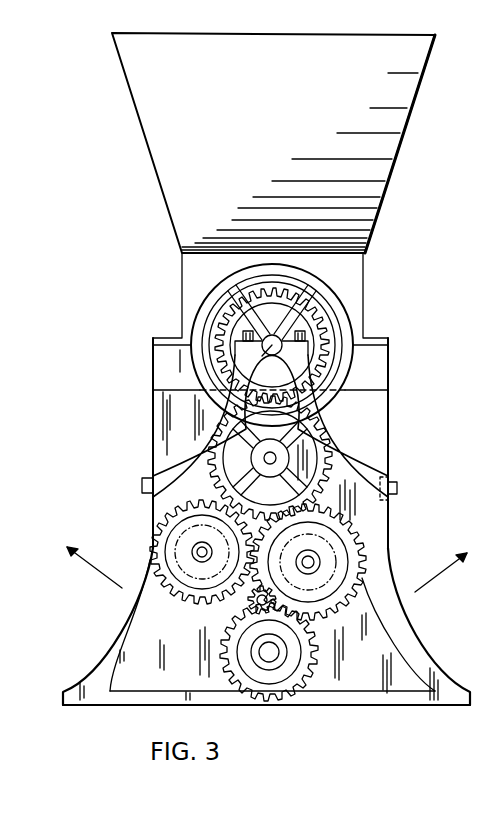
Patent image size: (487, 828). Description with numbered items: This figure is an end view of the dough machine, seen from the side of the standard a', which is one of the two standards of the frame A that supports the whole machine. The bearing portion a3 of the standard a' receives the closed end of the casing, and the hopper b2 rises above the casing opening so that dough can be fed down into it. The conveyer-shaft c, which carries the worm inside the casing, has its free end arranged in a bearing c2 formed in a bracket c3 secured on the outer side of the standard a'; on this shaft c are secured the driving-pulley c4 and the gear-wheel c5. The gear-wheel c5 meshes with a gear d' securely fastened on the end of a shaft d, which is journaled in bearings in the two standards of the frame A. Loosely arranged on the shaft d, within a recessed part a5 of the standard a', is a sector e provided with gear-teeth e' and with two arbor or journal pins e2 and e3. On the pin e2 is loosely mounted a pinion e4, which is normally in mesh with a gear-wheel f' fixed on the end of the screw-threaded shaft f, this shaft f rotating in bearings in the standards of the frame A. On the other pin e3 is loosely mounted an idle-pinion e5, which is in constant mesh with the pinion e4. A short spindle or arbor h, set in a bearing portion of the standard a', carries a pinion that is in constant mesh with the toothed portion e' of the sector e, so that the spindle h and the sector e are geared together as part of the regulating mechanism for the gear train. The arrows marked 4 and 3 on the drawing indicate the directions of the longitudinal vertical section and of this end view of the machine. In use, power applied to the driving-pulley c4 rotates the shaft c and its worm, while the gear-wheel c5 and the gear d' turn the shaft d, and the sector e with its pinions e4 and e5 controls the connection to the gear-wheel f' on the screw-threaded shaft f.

The hopper b2 is at (273, 143).
The bearing portion a3 is at (375, 368).
The standard a' is at (266, 521).
The frame A is at (257, 540).
The recessed part a5 is at (266, 660).
The gear-wheel c5 is at (320, 330).
The bearing c2 is at (310, 336).
The driving-pulley c4 is at (228, 297).
The conveyer-shaft c is at (273, 347).
The bracket c3 is at (343, 413).
The shaft d is at (290, 458).
The gear d' is at (339, 458).
The sector e is at (267, 477).
The idle-pinion e5 is at (163, 530).
The arbor or journal pin e3 is at (204, 551).
The gear-teeth e' is at (202, 558).
The pinion e4 is at (360, 545).
The arbor or journal pin e2 is at (315, 560).
The spindle or arbor h is at (245, 608).
The screw-threaded shaft f is at (260, 652).
The gear-wheel f' is at (275, 691).
The section line arrow 4 is at (84, 559).
The section line arrow 3 is at (450, 567).